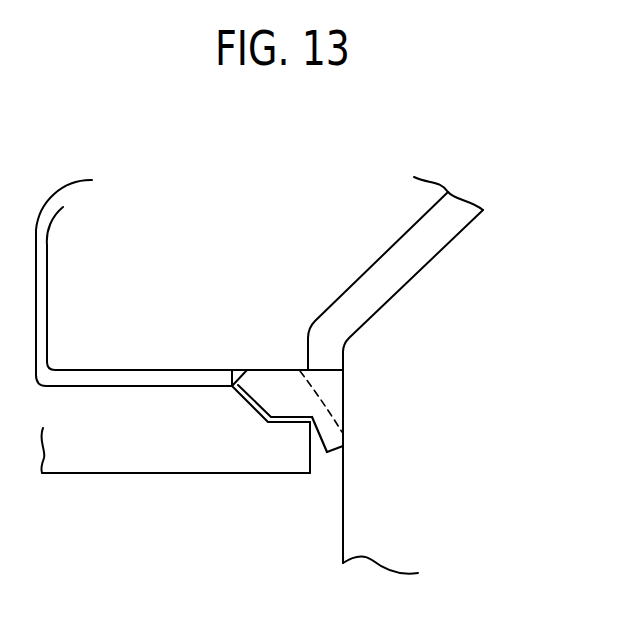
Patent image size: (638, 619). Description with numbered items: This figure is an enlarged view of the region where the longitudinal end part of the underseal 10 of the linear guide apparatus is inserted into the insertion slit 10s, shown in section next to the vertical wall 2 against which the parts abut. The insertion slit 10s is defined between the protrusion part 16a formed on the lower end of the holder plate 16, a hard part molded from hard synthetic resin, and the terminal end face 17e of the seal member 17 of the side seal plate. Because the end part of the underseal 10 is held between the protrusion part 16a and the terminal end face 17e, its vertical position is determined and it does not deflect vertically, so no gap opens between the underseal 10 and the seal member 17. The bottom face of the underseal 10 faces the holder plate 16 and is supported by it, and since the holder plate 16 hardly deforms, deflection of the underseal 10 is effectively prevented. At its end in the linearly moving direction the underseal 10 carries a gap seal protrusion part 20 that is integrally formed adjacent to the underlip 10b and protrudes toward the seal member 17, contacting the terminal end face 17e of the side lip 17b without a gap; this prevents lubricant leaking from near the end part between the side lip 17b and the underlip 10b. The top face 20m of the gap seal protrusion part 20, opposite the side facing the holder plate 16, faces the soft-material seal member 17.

The vehicle body panel 2 is at (343, 532).
The underseal 10 is at (293, 369).
The insertion slit 10s is at (262, 382).
The underlip 10b is at (343, 448).
The holder plate 16 is at (84, 430).
The protrusion part 16a is at (302, 448).
The seal member 17 is at (107, 262).
The side lip 17b is at (407, 257).
The terminal end face 17e is at (323, 370).
The gap seal protrusion part 20 is at (337, 392).
The top face 20m is at (328, 373).